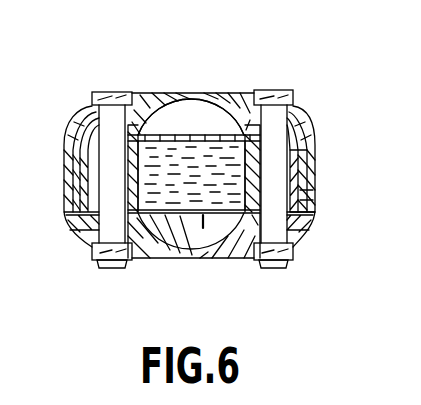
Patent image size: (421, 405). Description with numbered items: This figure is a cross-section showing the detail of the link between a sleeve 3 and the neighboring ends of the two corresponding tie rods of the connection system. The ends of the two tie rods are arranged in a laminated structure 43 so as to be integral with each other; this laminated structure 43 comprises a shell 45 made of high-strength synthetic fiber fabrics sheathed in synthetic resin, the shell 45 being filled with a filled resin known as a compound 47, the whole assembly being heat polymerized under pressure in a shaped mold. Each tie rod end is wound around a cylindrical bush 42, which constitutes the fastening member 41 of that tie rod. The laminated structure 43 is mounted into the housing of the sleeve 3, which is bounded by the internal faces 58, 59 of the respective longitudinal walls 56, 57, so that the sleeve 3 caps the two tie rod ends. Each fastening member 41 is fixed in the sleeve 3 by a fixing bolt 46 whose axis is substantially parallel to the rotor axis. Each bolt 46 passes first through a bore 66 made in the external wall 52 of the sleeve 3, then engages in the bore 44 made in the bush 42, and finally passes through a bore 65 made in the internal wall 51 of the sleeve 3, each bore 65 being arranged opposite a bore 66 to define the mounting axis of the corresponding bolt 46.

The sleeve 3 is at (155, 250).
The fastening member 41 is at (310, 140).
The cylindrical bush 42 is at (92, 162).
The laminated structure 43 is at (203, 248).
The bore 44 is at (316, 200).
The shell 45 is at (209, 108).
The bolt 46 is at (106, 124).
The compound 47 is at (178, 146).
The internal wall 51 is at (235, 243).
The external wall 52 is at (233, 100).
The longitudinal wall 56 is at (82, 200).
The longitudinal wall 57 is at (306, 204).
The internal face 58 is at (78, 213).
The internal face 59 is at (310, 167).
The bore 65 is at (80, 230).
The bore 66 is at (158, 112).